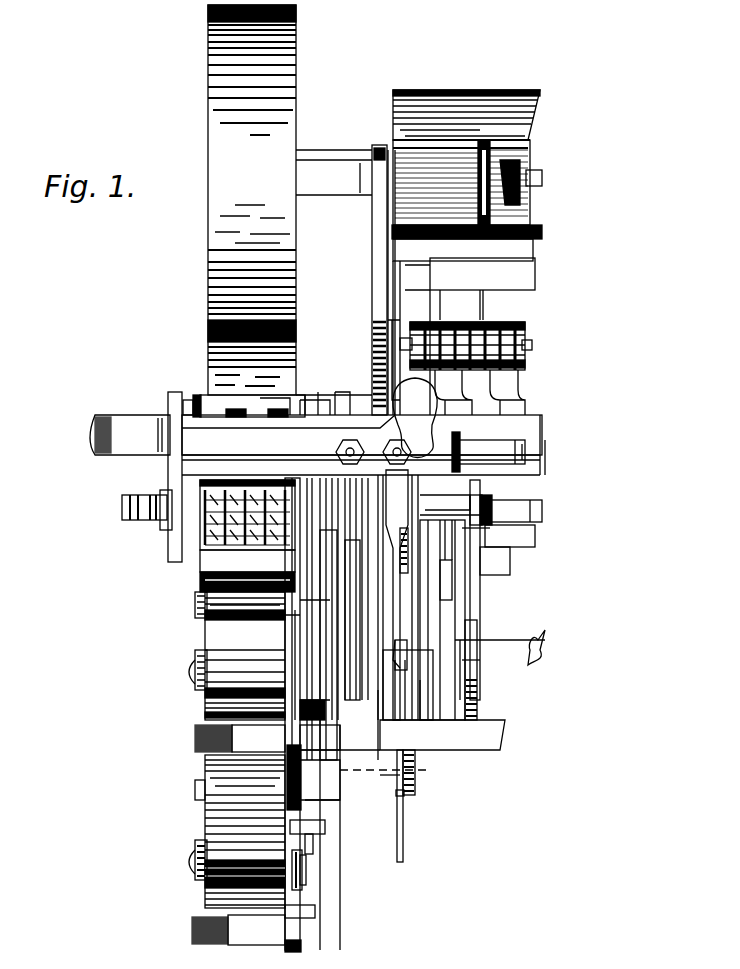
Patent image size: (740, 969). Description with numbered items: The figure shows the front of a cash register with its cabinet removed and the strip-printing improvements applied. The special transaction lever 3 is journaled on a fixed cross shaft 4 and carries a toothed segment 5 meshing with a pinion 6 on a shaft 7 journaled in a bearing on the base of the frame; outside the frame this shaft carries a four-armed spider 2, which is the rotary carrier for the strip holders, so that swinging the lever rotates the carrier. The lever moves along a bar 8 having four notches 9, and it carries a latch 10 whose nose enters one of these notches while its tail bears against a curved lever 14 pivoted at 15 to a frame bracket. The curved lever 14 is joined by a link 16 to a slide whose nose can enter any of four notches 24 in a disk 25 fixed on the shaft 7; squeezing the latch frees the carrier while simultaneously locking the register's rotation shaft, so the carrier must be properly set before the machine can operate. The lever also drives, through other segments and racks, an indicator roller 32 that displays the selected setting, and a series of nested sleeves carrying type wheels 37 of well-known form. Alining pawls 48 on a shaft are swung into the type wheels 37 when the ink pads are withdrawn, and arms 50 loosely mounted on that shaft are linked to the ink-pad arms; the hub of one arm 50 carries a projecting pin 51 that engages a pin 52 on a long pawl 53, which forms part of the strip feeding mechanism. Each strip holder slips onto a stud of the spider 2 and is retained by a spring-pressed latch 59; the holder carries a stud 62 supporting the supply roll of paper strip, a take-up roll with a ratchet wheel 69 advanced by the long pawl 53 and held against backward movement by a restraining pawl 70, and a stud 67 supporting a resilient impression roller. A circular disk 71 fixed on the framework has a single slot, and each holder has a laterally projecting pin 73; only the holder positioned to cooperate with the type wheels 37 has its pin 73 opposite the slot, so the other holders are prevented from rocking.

The spider 2 is at (305, 930).
The special transaction lever 3 is at (415, 443).
The fixed cross shaft 4 is at (490, 640).
The toothed segment 5 is at (410, 712).
The pinion 6 is at (413, 790).
The shaft 7 is at (372, 790).
The bar 8 is at (470, 595).
The notches 9 is at (460, 575).
The latch 10 is at (525, 482).
The curved lever 14 is at (480, 615).
The pivot 15 is at (540, 532).
The link 16 is at (395, 672).
The notches 24 is at (384, 809).
The disk 25 is at (404, 858).
The indicator roller 32 is at (393, 160).
The type wheels 37 is at (200, 550).
The alining pawls 48 is at (250, 548).
The arms 50 is at (180, 540).
The projecting pin 51 is at (265, 602).
The pin 52 is at (265, 612).
The long pawl 53 is at (300, 620).
The latch 59 is at (205, 912).
The stud 62 is at (375, 700).
The stud 67 is at (200, 668).
The ratchet wheel 69 is at (306, 880).
The restraining pawl 70 is at (302, 862).
The circular disk 71 is at (313, 850).
The laterally projecting pin 73 is at (312, 828).